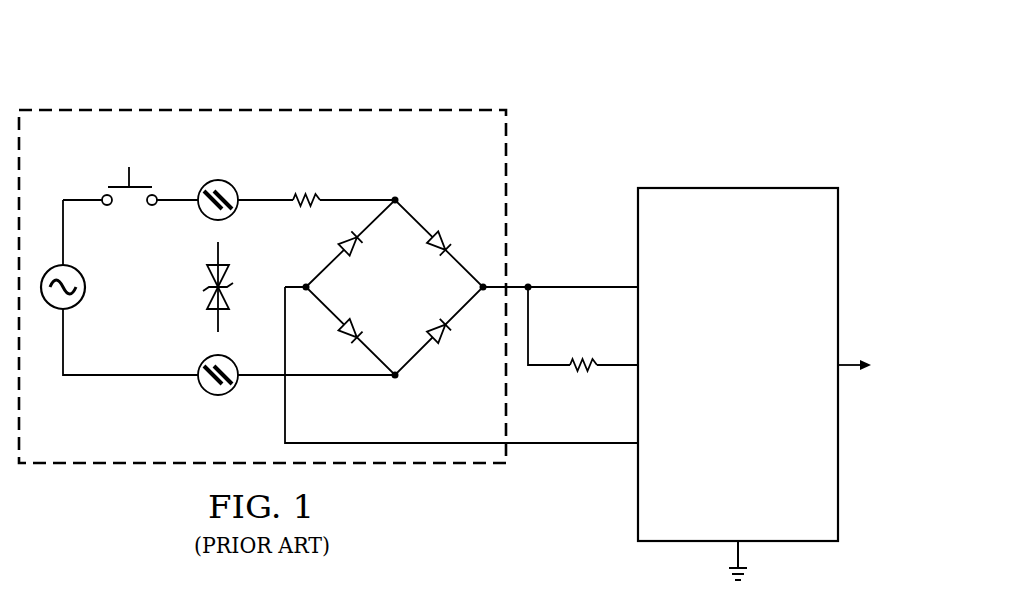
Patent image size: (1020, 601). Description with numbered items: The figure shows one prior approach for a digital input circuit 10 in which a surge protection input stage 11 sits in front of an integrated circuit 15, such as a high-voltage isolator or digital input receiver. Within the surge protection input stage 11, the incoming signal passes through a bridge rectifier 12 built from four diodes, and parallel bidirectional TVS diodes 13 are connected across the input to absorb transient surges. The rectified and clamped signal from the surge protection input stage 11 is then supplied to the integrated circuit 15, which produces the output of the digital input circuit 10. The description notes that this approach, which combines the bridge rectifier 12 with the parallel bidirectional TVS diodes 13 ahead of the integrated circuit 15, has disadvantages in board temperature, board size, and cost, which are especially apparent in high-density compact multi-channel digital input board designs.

The digital input circuit 10 is at (554, 72).
The surge protection input stage 11 is at (183, 109).
The bridge rectifier 12 is at (408, 304).
The parallel bidirectional TVS diodes 13 is at (229, 283).
The integrated circuit 15 is at (752, 398).